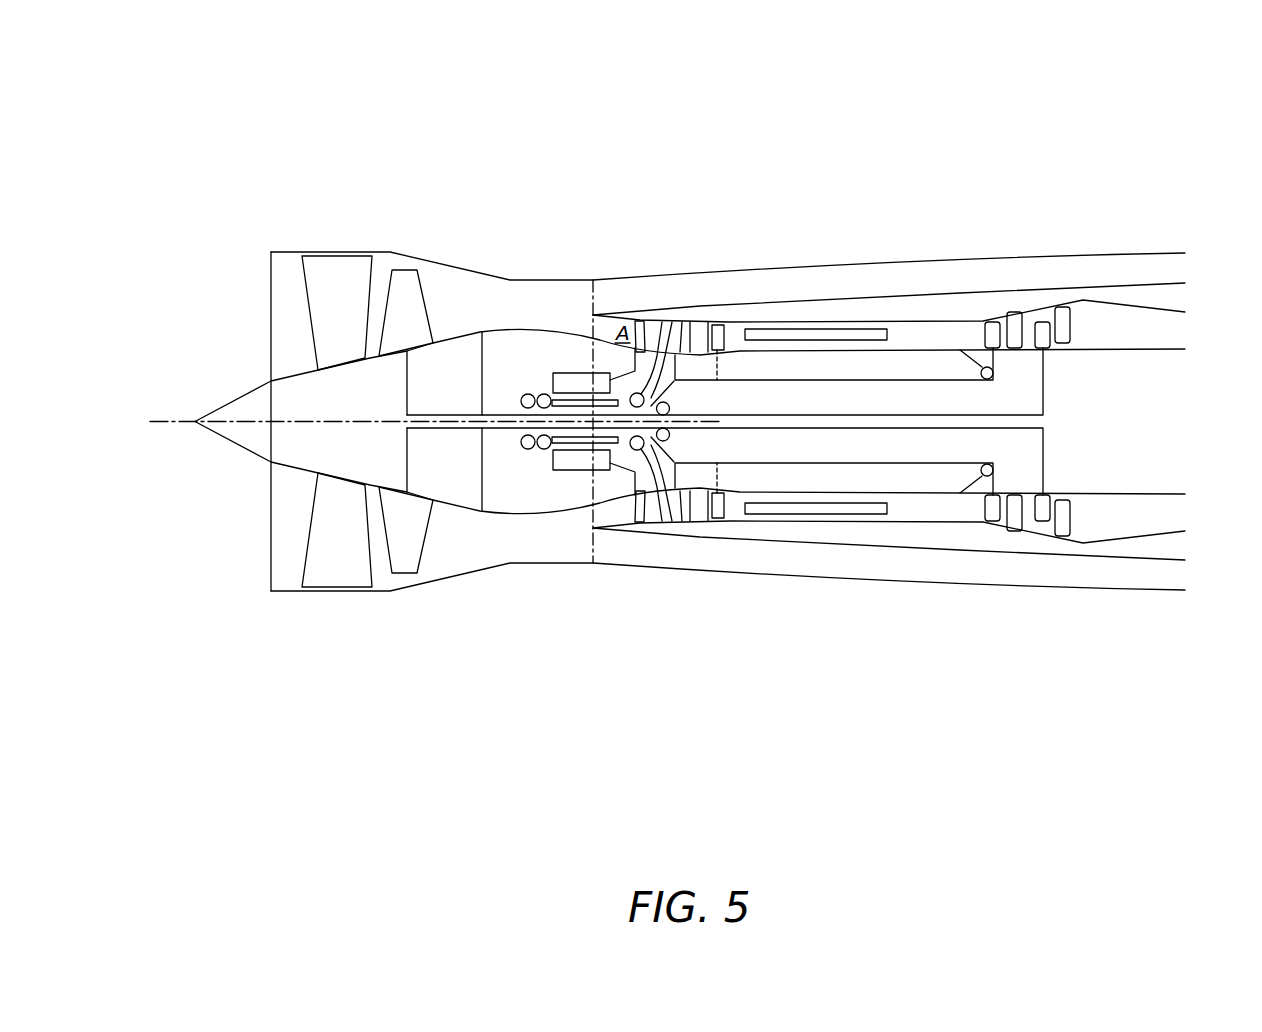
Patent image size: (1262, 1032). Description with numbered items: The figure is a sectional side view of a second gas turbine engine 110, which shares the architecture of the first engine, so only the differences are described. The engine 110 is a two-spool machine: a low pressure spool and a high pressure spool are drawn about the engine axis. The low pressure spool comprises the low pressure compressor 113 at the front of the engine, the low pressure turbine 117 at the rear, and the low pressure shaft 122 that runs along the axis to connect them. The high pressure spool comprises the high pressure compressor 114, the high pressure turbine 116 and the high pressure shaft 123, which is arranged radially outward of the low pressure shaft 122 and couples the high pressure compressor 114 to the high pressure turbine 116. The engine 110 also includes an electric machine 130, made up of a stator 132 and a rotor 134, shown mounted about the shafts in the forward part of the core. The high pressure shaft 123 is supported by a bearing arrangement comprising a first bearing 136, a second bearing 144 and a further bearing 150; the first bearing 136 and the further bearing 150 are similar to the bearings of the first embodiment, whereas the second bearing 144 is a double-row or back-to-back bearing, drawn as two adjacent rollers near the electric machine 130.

The second gas turbine engine 110 is at (650, 122).
The low pressure compressor 113 is at (497, 591).
The high pressure compressor 114 is at (645, 539).
The high pressure turbine 116 is at (990, 322).
The low pressure turbine 117 is at (1038, 322).
The low pressure shaft 122 is at (833, 417).
The high pressure shaft 123 is at (925, 463).
The electric machine 130 is at (537, 397).
The stator 132 is at (580, 372).
The rotor 134 is at (572, 449).
The first bearing 136 is at (662, 322).
The second bearing 144 is at (537, 394).
The further bearing 150 is at (993, 370).